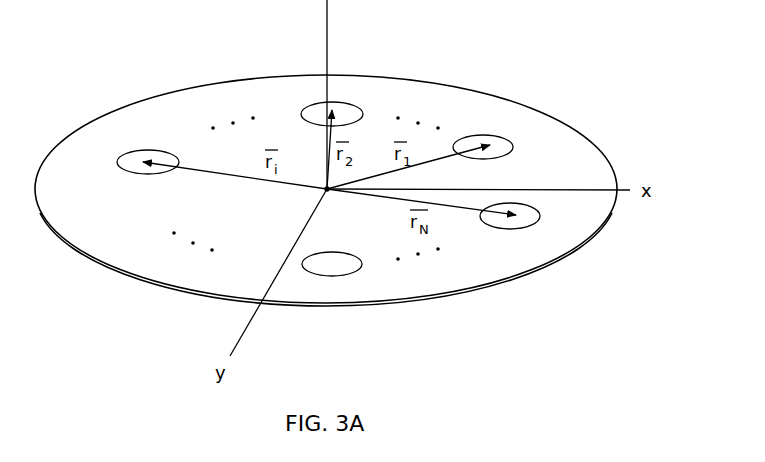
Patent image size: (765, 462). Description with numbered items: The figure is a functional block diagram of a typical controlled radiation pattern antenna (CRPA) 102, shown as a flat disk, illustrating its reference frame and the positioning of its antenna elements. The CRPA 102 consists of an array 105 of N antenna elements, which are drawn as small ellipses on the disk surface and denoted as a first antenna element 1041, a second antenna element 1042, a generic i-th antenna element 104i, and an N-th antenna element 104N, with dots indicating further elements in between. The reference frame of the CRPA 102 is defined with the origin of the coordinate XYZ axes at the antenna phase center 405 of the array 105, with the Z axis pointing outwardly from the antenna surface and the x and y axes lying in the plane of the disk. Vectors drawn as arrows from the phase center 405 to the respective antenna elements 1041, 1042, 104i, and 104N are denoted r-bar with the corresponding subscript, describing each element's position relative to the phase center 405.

The controlled radiation pattern antenna 102 is at (508, 283).
The antenna element 1041 is at (512, 148).
The antenna element 1042 is at (345, 105).
The antenna element 104N is at (536, 218).
The antenna element 104i is at (128, 163).
The array 105 is at (404, 136).
The antenna phase center 405 is at (326, 191).